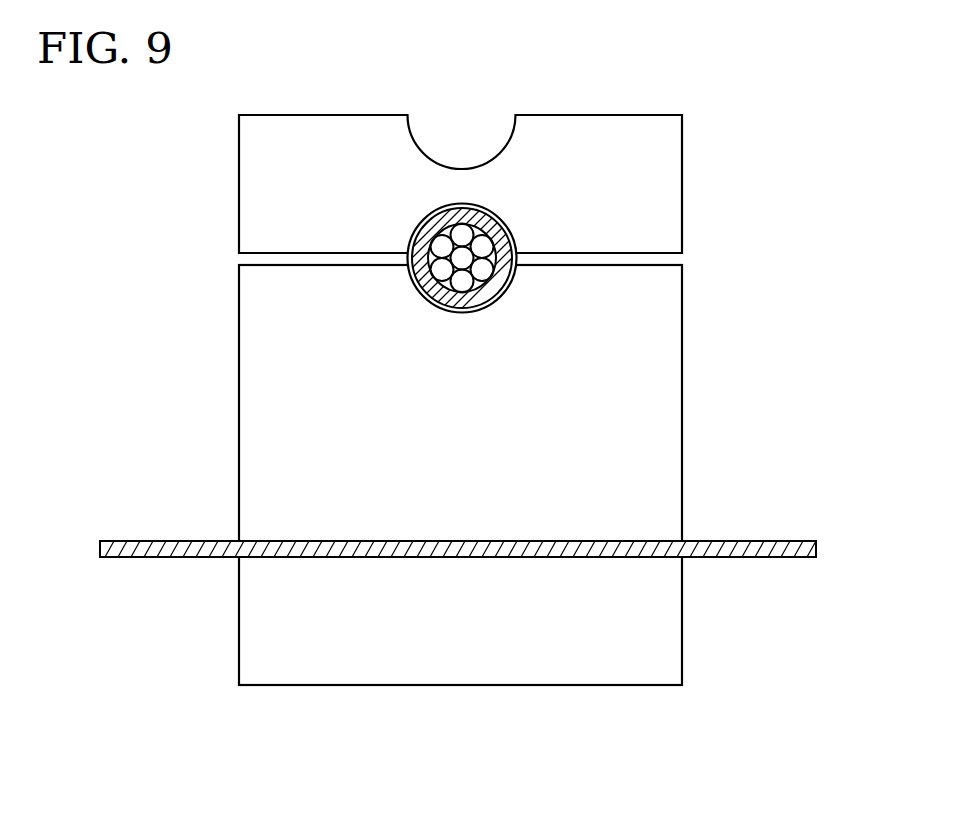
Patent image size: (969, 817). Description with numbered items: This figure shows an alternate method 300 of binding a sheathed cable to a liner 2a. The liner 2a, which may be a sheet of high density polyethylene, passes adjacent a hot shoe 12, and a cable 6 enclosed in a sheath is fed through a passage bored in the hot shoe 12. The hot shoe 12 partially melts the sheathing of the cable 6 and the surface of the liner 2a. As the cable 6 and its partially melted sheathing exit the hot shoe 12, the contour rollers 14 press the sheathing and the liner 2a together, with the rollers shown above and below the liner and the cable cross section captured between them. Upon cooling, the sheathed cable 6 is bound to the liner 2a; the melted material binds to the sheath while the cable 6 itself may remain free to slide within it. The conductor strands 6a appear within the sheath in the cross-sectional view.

The method of binding a cable to a liner 300 is at (688, 88).
The contour rollers 14 is at (258, 183).
The hot shoe 12 is at (258, 344).
The liner 2a is at (742, 557).
The cable 6 is at (477, 282).
The conductor wires 6a is at (510, 238).